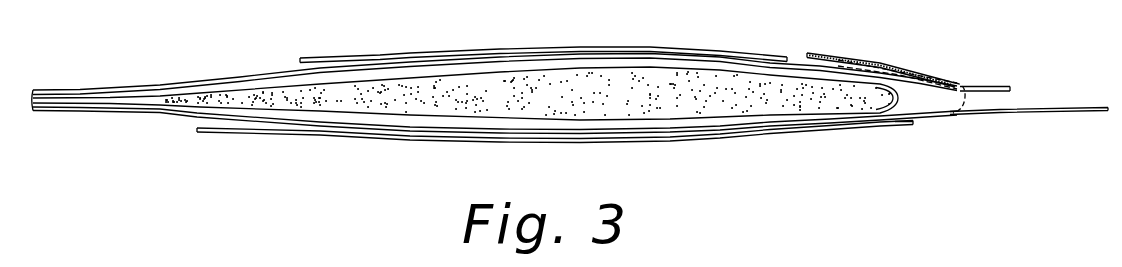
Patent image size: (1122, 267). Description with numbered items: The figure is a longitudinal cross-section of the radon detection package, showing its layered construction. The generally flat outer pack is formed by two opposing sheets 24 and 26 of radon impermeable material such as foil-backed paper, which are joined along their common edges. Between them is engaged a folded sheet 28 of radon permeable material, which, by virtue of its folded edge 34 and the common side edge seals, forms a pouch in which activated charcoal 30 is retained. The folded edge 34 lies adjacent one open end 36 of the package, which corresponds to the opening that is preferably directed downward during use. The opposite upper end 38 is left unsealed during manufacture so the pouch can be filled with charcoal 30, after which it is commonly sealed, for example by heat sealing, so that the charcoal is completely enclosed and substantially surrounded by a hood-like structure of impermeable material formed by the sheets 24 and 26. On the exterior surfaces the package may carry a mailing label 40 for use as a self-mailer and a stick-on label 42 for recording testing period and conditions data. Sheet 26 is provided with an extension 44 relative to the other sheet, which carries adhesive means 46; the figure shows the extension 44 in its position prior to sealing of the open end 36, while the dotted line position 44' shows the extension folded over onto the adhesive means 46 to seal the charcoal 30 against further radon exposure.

The opposing sheet 24 is at (239, 77).
The opposing sheet 26 is at (170, 114).
The folded sheet 28 is at (274, 88).
The charcoal 30 is at (572, 80).
The folded edge 34 is at (893, 112).
The open end 36 is at (964, 103).
The upper end 38 is at (72, 110).
The exterior mailing label 40 is at (312, 58).
The stick-on label 42 is at (232, 133).
The extension 44 is at (1029, 132).
The extension in folded position 44' is at (897, 59).
The adhesive means 46 is at (799, 58).